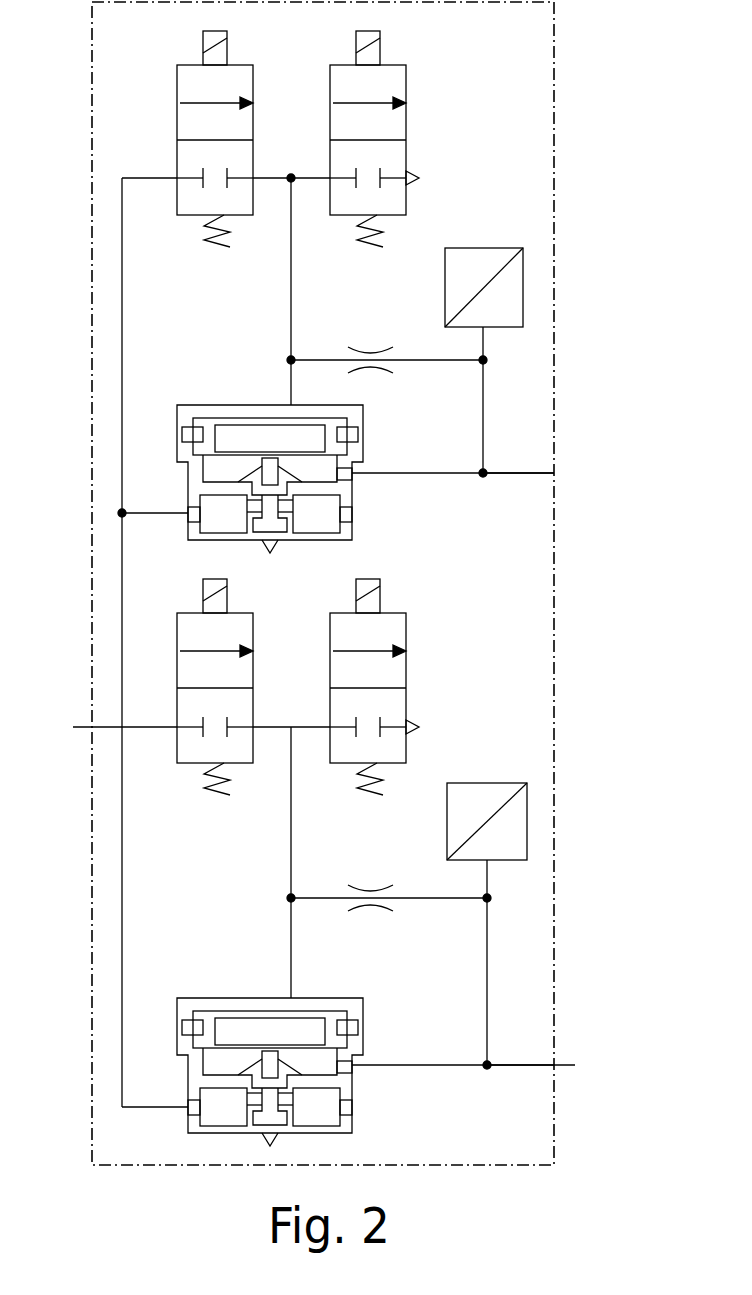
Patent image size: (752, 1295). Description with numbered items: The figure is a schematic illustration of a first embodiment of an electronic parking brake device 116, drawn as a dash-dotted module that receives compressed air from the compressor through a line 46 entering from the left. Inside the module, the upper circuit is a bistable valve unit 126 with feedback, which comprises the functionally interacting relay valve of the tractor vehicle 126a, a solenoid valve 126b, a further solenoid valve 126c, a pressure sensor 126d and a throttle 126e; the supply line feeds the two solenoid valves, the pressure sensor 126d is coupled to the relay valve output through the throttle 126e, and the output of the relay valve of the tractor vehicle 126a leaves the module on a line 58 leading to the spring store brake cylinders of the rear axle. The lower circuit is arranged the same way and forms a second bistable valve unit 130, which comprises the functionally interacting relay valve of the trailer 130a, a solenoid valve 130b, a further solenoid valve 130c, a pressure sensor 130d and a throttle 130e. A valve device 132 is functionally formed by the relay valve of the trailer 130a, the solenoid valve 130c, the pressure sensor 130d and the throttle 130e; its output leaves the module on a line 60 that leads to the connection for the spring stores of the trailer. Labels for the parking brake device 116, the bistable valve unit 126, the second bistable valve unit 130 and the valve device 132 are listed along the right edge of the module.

The electronic parking brake device 116 is at (620, 47).
The bistable valve unit with feedback 126 is at (620, 163).
The second bistable valve unit 130 is at (620, 278).
The valve device 132 is at (620, 393).
The relay valve of the tractor vehicle 126a is at (227, 405).
The solenoid valve 126b is at (187, 90).
The further solenoid valve 126c is at (392, 83).
The pressure sensor 126d is at (487, 248).
The throttle 126e is at (372, 347).
The relay valve of the trailer 130a is at (225, 998).
The solenoid valve 130b is at (192, 758).
The further solenoid valve 130c is at (388, 628).
The pressure sensor 130d is at (487, 783).
The throttle 130e is at (385, 888).
The line 46 is at (83, 722).
The line 58 is at (533, 473).
The line 60 is at (527, 1064).